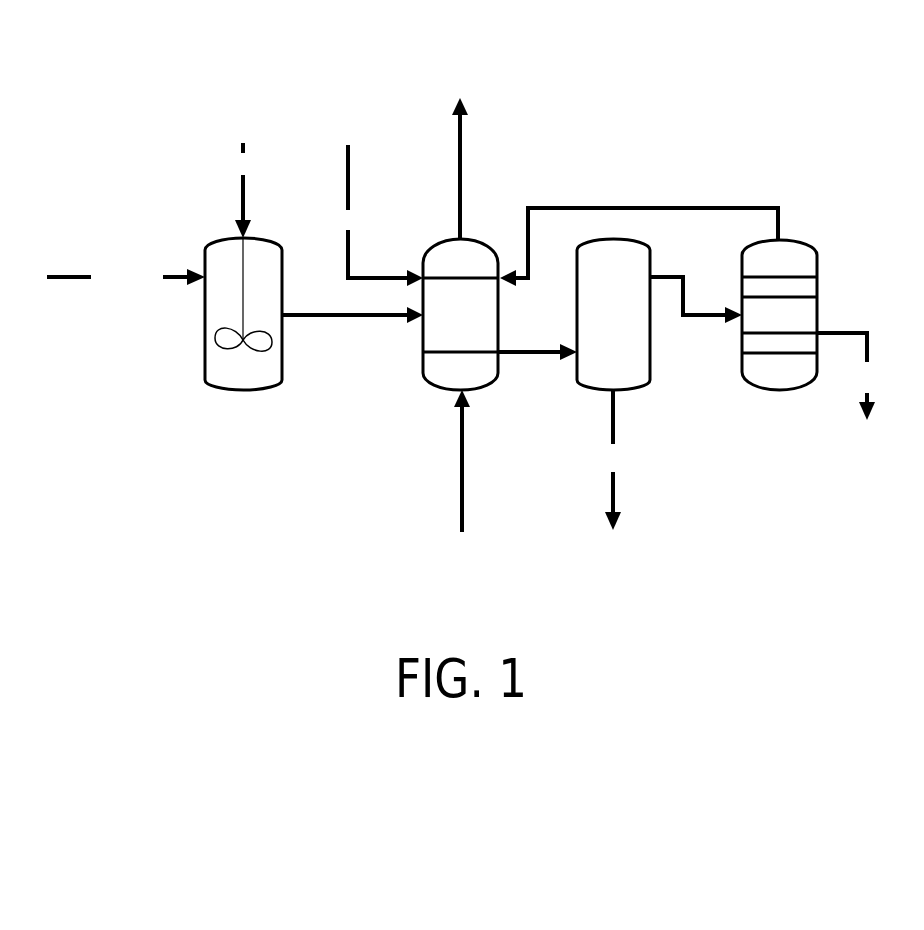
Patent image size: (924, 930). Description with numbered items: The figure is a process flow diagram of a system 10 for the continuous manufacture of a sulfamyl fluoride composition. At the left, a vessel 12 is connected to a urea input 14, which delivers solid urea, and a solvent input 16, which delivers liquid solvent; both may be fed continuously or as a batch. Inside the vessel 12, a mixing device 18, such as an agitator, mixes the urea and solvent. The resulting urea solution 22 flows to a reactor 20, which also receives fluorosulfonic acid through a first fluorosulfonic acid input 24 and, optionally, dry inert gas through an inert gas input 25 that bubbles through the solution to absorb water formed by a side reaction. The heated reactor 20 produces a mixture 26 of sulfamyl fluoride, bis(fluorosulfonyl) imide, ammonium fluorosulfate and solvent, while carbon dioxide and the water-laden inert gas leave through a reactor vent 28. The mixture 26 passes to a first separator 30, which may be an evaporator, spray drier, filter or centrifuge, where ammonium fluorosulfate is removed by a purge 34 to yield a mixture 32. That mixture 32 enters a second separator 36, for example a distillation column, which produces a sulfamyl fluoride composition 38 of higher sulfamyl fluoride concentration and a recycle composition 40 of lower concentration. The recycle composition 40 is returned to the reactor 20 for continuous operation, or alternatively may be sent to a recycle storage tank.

The system 10 is at (182, 101).
The vessel 12 is at (242, 390).
The urea input 14 is at (242, 210).
The solvent input 16 is at (72, 277).
The mixing device 18 is at (242, 312).
The reactor 20 is at (428, 383).
The urea solution 22 is at (358, 317).
The first fluorosulfonic acid input 24 is at (348, 157).
The inert gas input 25 is at (462, 487).
The mixture 26 is at (528, 355).
The reactor vent 28 is at (462, 130).
The first separator 30 is at (583, 385).
The mixture 32 is at (700, 315).
The purge 34 is at (615, 492).
The second separator 36 is at (778, 390).
The sulfamyl fluoride composition 38 is at (837, 333).
The recycle composition 40 is at (693, 208).